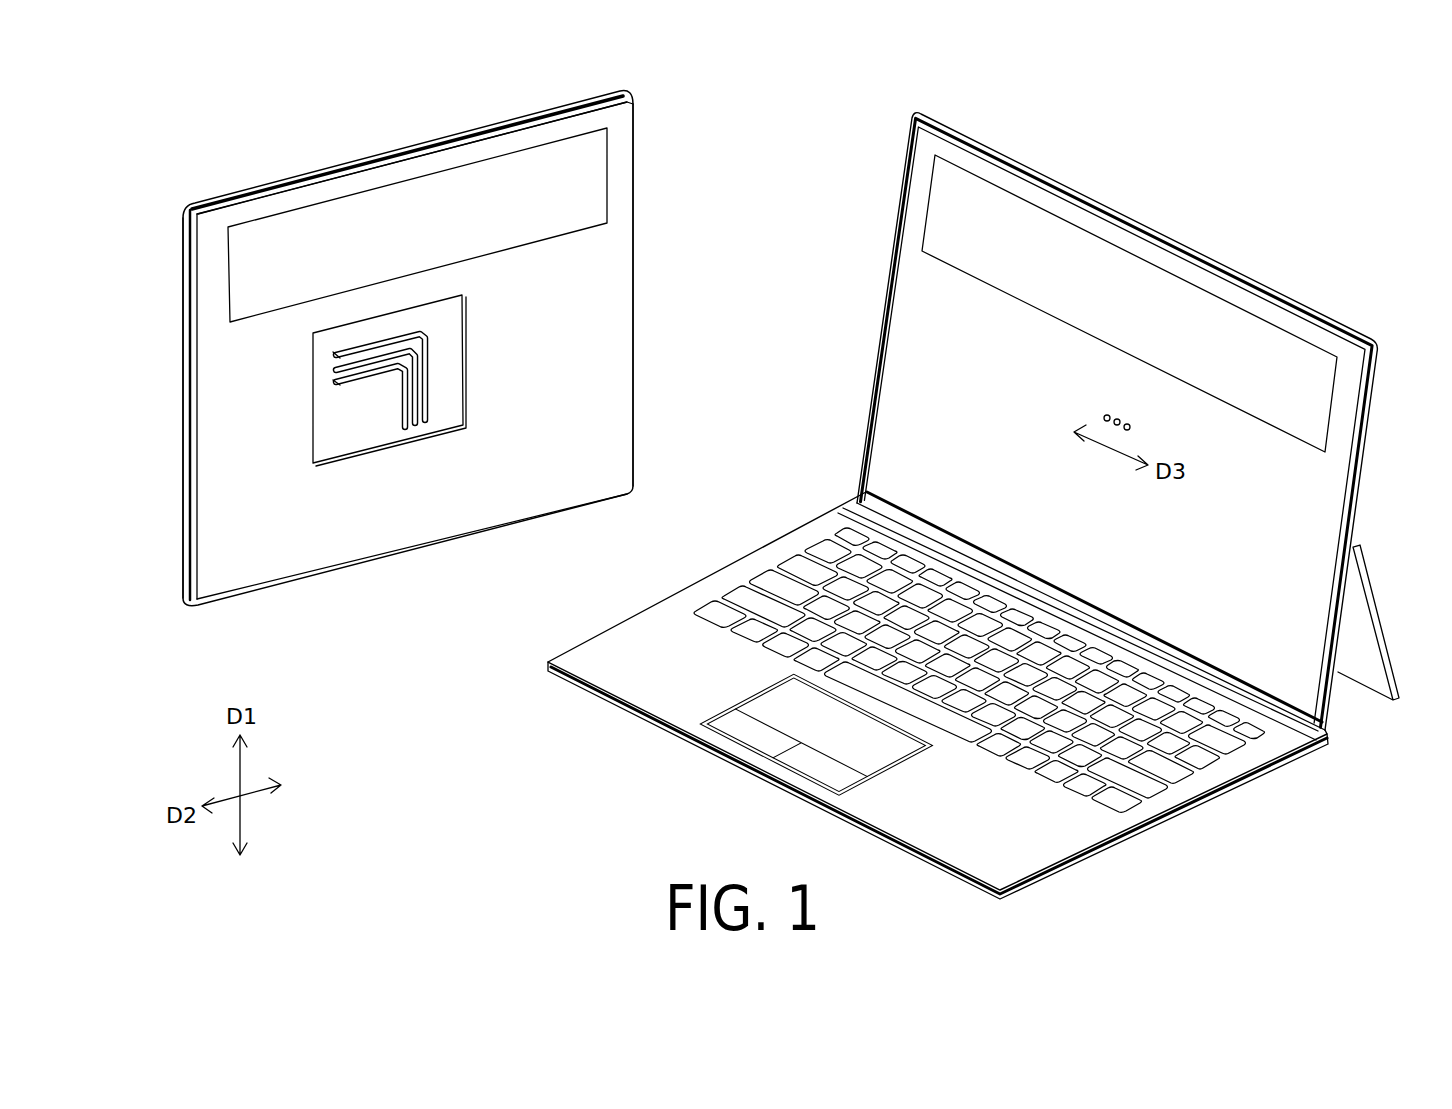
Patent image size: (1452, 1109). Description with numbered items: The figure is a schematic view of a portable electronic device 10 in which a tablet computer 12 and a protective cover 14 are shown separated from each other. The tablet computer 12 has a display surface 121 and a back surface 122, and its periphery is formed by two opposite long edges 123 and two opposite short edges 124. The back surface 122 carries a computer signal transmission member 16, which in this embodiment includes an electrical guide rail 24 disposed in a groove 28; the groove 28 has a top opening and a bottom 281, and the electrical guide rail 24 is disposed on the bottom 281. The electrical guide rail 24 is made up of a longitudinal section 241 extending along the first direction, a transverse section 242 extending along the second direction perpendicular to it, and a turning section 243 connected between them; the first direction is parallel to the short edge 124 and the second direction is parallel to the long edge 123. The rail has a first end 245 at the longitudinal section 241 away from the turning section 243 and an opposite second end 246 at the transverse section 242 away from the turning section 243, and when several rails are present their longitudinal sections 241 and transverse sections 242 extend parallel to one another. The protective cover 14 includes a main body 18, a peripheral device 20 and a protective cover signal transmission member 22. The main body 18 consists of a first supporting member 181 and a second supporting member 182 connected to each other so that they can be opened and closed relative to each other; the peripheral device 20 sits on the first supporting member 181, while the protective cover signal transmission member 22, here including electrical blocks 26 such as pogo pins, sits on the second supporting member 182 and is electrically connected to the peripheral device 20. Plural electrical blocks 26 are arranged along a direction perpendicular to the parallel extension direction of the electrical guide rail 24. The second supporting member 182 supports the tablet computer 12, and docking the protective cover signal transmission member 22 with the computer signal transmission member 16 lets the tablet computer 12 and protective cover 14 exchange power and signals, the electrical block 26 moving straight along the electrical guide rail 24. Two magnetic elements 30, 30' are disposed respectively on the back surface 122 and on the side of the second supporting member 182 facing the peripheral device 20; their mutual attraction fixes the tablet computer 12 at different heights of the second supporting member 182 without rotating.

The portable electronic device 10 is at (136, 108).
The tablet computer 12 is at (250, 166).
The display surface 121 is at (180, 240).
The back surface 122 is at (590, 285).
The long edge 123 is at (432, 140).
The short edge 124 is at (637, 210).
The protective cover 14 is at (1242, 246).
The computer signal transmission member 16 is at (385, 331).
The main body 18 is at (1405, 750).
The first supporting member 181 is at (1266, 776).
The second supporting member 182 is at (1334, 712).
The peripheral device 20 is at (1186, 766).
The protective cover signal transmission member 22 is at (1122, 404).
The electrical guide rail 24 is at (435, 413).
The longitudinal section 241 is at (412, 425).
The transverse section 242 is at (334, 386).
The turning section 243 is at (383, 390).
The first end 245 is at (421, 422).
The second end 246 is at (328, 372).
The electrical block 26 is at (1105, 412).
The groove 28 is at (352, 318).
The bottom 281 is at (330, 345).
The magnetic element 30 is at (463, 225).
The magnetic element 30' is at (1087, 303).